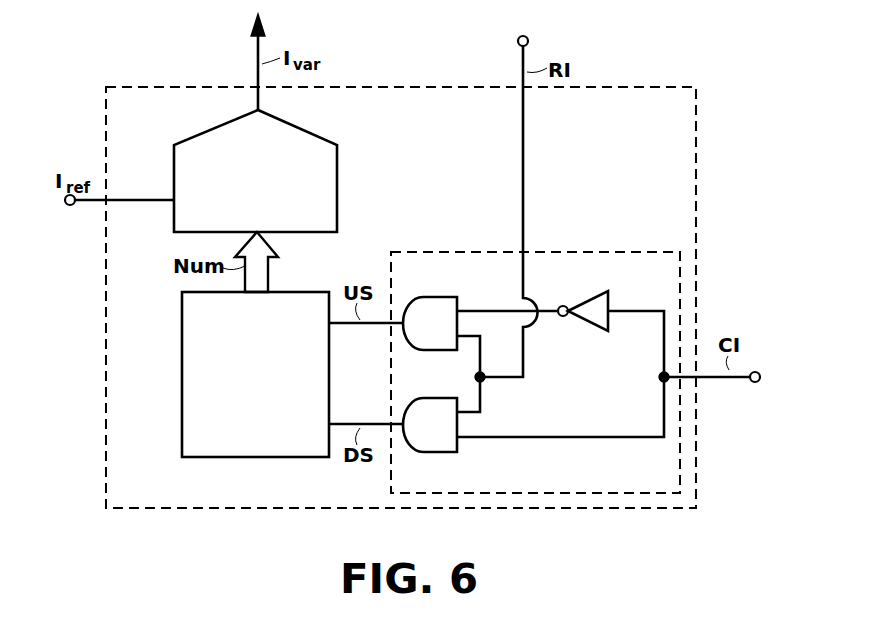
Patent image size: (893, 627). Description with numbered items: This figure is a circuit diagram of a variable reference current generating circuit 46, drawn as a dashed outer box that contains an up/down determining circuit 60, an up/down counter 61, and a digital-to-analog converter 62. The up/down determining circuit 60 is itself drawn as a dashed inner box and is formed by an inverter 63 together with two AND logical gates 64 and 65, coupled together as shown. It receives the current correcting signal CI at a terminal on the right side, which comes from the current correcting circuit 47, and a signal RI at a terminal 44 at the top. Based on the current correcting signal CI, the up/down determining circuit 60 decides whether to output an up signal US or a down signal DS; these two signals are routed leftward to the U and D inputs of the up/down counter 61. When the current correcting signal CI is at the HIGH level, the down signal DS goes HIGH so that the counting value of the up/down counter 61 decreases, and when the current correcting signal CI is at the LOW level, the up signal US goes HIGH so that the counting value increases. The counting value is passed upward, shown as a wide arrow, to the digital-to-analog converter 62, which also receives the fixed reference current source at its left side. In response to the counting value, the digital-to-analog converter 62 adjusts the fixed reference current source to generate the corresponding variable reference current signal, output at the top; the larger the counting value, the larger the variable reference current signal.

The reference input terminal (RI) 44 is at (528, 36).
The variable reference current generating circuit 46 is at (697, 136).
The current correcting circuit 47 is at (761, 379).
The up/down determining circuit 60 is at (631, 250).
The up/down counter 61 is at (182, 382).
The digital-to-analog converter 62 is at (338, 180).
The inverter 63 is at (597, 293).
The AND logical gate 64 is at (443, 297).
The AND logical gate 65 is at (443, 452).